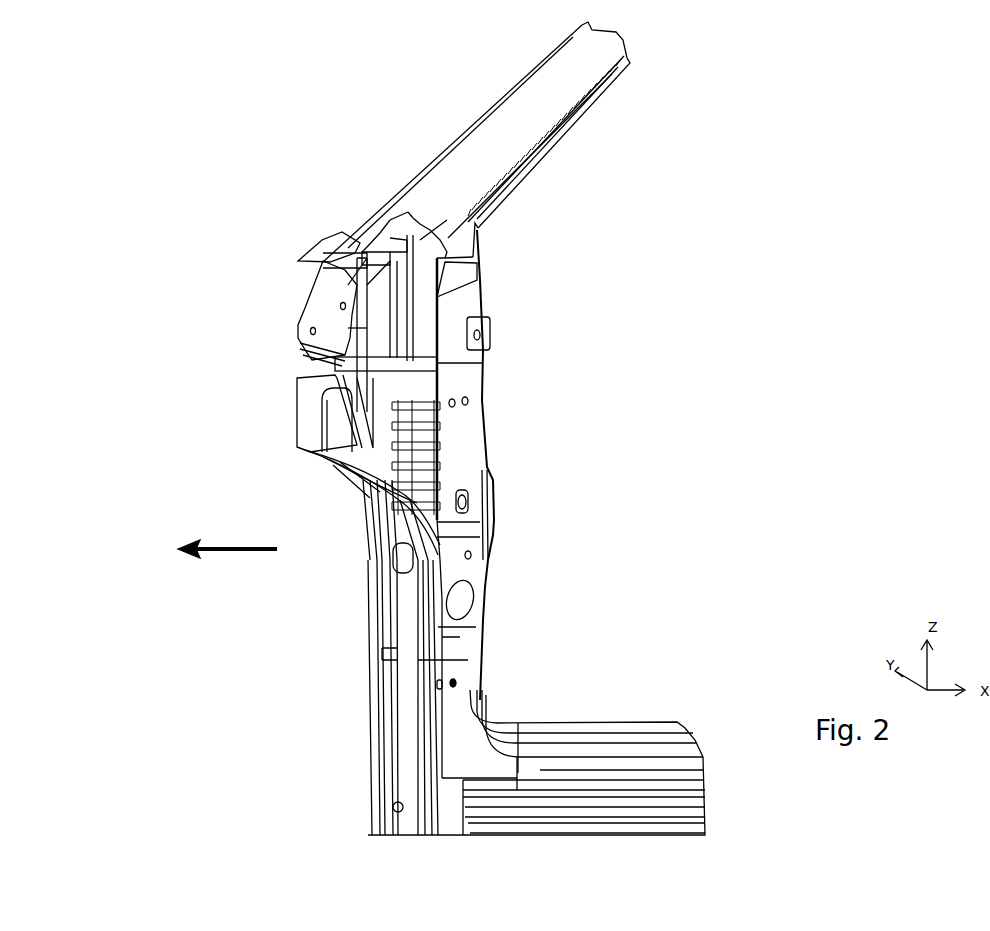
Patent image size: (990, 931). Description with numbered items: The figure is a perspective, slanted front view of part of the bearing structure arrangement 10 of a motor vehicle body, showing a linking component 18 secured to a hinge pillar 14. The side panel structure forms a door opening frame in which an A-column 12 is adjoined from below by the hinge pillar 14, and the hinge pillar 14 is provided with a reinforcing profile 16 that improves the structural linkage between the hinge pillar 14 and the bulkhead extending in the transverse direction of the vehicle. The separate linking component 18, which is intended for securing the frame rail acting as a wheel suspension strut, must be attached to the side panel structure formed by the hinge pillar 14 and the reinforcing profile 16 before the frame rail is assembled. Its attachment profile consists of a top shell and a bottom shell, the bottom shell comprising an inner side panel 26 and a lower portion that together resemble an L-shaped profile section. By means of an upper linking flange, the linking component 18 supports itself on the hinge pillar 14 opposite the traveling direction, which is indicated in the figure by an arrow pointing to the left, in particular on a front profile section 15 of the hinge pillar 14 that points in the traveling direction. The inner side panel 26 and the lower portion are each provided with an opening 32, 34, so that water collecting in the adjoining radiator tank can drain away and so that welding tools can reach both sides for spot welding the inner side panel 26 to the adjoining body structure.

The bearing structure arrangement 10 is at (757, 338).
The A-column 12 is at (478, 148).
The hinge pillar 14 is at (478, 412).
The front profile section 15 is at (403, 628).
The reinforcing profile 16 is at (316, 306).
The linking component 18 is at (249, 450).
The inner side panel 26 is at (308, 394).
The opening 32 is at (330, 442).
The opening 34 is at (358, 517).